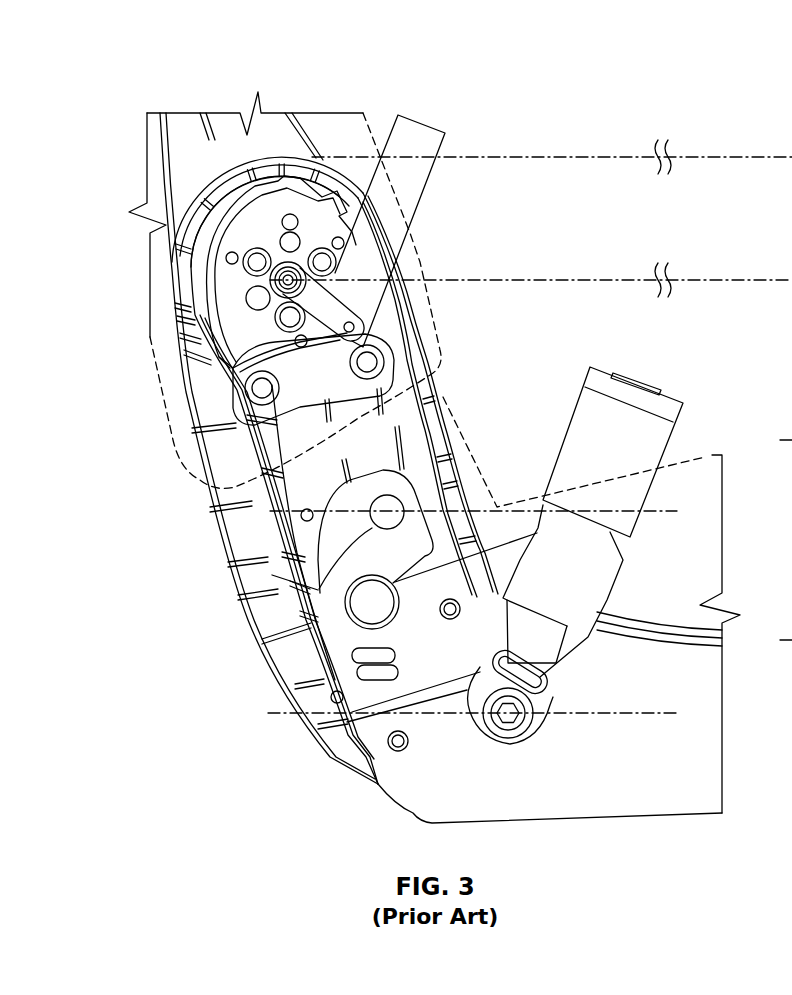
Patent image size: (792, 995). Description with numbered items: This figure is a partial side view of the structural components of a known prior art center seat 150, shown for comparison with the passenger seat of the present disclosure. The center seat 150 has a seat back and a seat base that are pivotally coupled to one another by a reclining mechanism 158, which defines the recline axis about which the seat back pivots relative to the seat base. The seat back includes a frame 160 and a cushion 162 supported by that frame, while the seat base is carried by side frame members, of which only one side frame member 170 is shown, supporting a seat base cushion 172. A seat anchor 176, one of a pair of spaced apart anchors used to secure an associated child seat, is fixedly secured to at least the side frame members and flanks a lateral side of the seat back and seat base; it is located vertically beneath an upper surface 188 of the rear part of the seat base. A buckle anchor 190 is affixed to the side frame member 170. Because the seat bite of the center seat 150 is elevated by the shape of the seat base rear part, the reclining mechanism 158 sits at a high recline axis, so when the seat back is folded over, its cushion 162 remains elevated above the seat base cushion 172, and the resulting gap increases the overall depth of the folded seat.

The center seat 150 is at (298, 799).
The reclining mechanism 158 is at (211, 396).
The frame 160 is at (332, 127).
The cushion 162 is at (418, 258).
The side frame member 170 is at (675, 797).
The cushion 172 is at (702, 457).
The seat anchor 176 is at (237, 595).
The upper surface 188 is at (460, 437).
The buckle anchor 190 is at (508, 720).